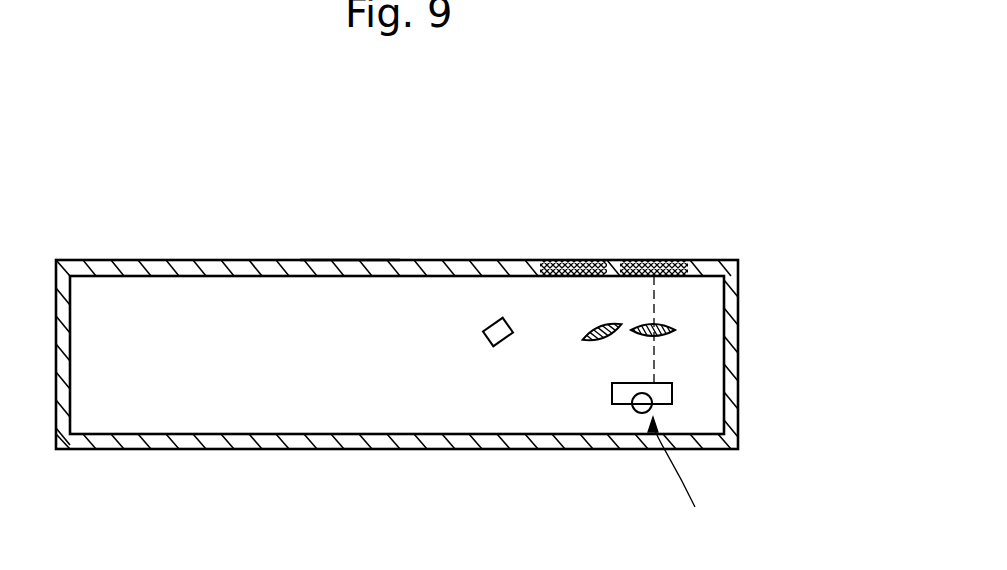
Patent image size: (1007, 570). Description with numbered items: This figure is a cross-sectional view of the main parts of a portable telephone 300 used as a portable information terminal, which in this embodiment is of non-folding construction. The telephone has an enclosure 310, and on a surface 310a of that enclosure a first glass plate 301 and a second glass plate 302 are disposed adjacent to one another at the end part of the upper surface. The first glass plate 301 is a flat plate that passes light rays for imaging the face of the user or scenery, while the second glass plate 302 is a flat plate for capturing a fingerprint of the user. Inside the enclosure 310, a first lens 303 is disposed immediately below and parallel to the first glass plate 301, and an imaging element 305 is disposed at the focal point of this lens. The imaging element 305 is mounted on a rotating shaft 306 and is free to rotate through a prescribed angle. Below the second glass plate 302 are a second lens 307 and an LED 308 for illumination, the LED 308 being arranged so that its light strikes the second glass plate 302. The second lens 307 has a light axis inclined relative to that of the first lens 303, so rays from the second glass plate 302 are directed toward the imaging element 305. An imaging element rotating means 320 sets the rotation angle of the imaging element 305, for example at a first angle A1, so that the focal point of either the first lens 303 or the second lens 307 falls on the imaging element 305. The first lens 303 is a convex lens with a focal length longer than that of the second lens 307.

The portable telephone 300 is at (780, 287).
The enclosure 310 is at (730, 398).
The surface of the enclosure 310a is at (352, 268).
The second glass plate 302 is at (580, 260).
The first glass plate 301 is at (648, 260).
The first angle A1 is at (657, 348).
The first lens 303 is at (655, 325).
The second lens 307 is at (607, 338).
The LED 308 is at (487, 326).
The imaging element 305 is at (665, 382).
The rotating shaft 306 is at (632, 407).
The imaging element rotating means 320 is at (688, 484).